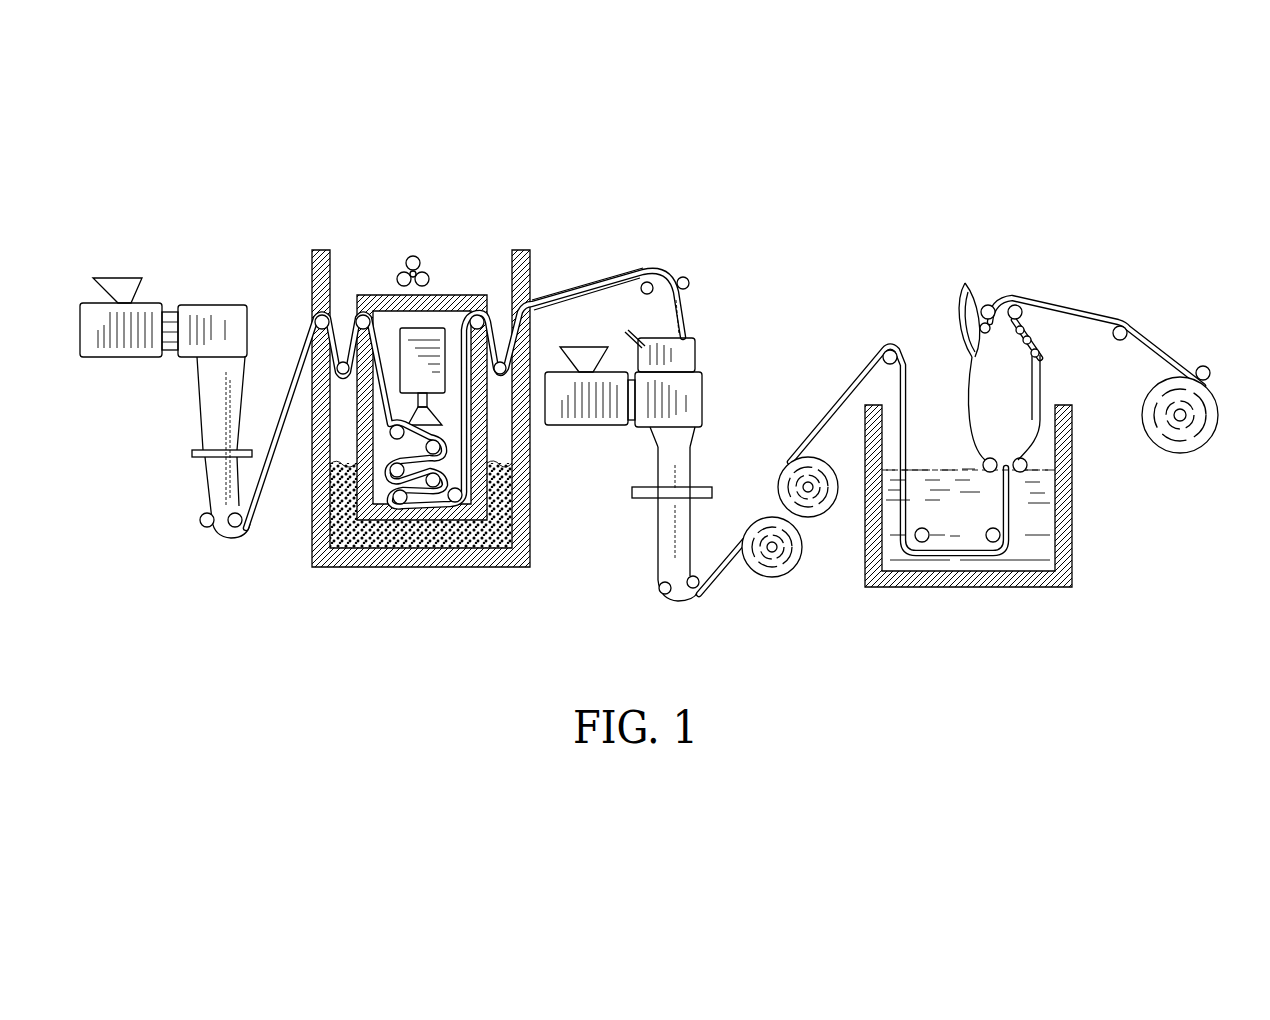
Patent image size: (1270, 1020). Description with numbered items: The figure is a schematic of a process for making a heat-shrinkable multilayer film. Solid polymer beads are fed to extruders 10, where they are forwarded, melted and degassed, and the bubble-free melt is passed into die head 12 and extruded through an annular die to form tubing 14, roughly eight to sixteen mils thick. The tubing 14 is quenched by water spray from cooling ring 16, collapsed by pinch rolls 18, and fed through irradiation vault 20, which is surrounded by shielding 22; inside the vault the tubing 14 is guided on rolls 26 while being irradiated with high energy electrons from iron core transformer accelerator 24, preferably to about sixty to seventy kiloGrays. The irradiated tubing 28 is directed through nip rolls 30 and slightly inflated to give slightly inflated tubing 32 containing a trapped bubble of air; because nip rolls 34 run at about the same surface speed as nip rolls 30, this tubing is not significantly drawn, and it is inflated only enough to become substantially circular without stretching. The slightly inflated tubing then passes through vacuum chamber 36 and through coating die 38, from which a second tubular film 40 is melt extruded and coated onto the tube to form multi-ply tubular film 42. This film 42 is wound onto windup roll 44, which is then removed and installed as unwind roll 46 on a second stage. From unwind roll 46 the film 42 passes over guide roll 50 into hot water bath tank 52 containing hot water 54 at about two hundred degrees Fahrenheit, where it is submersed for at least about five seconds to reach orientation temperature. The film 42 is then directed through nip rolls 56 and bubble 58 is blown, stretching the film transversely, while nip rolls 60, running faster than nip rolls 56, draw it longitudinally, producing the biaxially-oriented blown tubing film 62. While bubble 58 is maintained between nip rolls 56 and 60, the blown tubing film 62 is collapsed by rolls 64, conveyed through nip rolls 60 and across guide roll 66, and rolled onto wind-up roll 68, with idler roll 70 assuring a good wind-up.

The extruder 10 is at (110, 325).
The die head 12 is at (218, 318).
The tubing 14 is at (200, 405).
The cooling ring 16 is at (192, 452).
The pinch rolls 18 is at (200, 517).
The irradiation vault 20 is at (510, 462).
The shielding 22 is at (455, 567).
The iron core transformer accelerator 24 is at (428, 347).
The rolls 26 is at (380, 476).
The irradiated tubing 28 is at (540, 300).
The nip rolls 30 is at (684, 280).
The slightly inflated tubing 32 is at (690, 315).
The nip rolls 34 is at (660, 588).
The vacuum chamber 36 is at (697, 358).
The coating die 38 is at (704, 388).
The second tubular film 40 is at (652, 432).
The multi-ply tubular film 42 is at (692, 455).
The windup roll 44 is at (770, 577).
The unwind roll 46 is at (810, 518).
The guide roll 50 is at (888, 345).
The hot water bath tank 52 is at (1072, 535).
The hot water 54 is at (1045, 510).
The nip rolls 56 is at (984, 460).
The bubble 58 is at (1040, 363).
The nip rolls 60 is at (1022, 305).
The blown tubing film 62 is at (1090, 310).
The rolls 64 is at (968, 357).
The guide roll 66 is at (1130, 325).
The wind-up roll 68 is at (1220, 412).
The idler roll 70 is at (1212, 375).